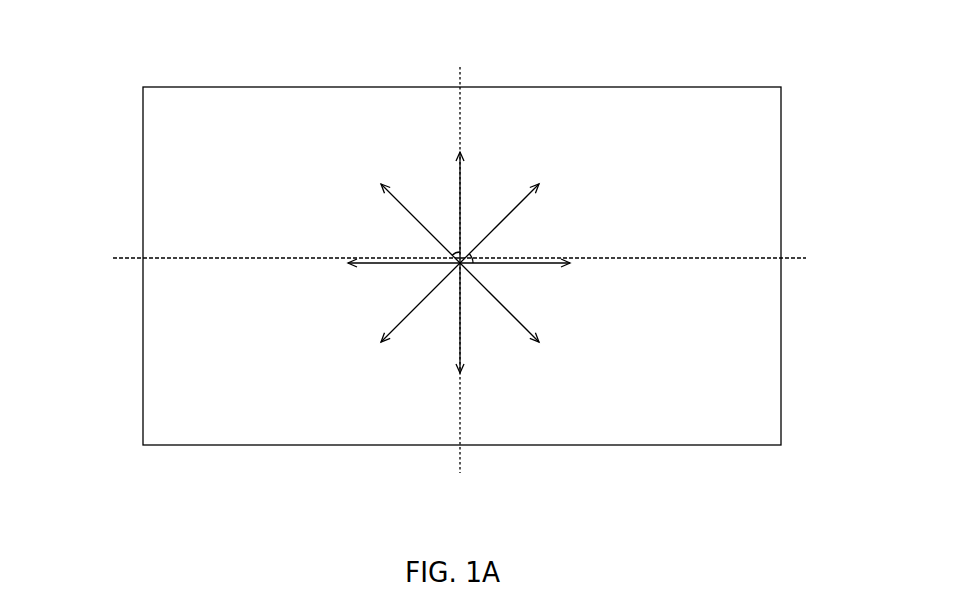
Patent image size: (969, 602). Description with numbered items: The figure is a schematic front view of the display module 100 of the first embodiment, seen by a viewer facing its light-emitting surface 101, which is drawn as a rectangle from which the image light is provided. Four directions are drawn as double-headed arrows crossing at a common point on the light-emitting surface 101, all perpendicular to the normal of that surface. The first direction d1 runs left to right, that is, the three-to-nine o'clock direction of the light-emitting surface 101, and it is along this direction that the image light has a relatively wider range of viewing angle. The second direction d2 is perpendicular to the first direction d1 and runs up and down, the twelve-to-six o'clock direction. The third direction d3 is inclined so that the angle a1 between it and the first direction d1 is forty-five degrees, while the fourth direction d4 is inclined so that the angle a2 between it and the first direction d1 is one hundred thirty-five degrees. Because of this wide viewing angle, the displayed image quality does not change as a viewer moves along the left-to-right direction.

The display module 100 is at (72, 28).
The light-emitting surface 101 is at (763, 385).
The first direction d1 is at (459, 253).
The second direction d2 is at (469, 262).
The third direction d3 is at (462, 263).
The fourth direction d4 is at (454, 263).
The angle a1 is at (475, 259).
The angle a2 is at (457, 252).